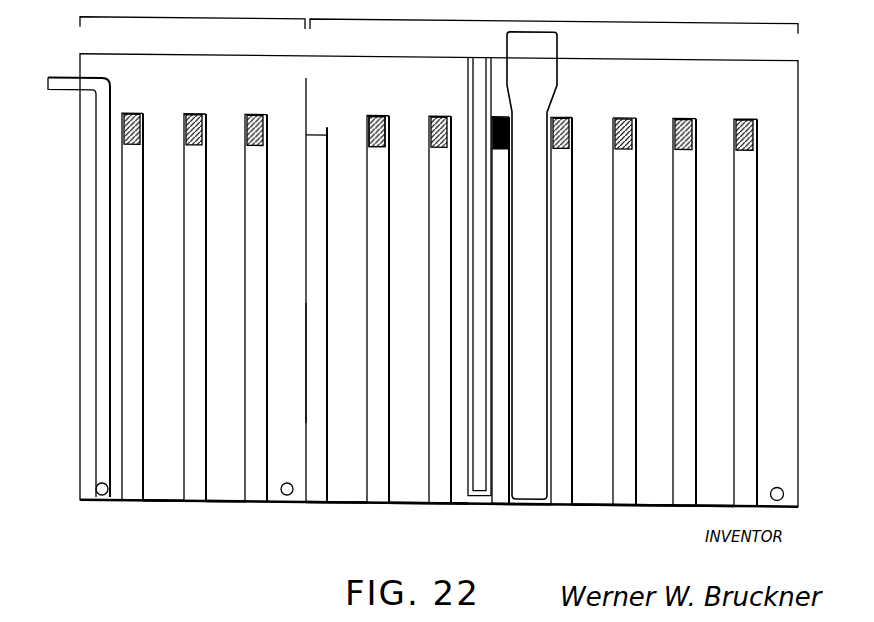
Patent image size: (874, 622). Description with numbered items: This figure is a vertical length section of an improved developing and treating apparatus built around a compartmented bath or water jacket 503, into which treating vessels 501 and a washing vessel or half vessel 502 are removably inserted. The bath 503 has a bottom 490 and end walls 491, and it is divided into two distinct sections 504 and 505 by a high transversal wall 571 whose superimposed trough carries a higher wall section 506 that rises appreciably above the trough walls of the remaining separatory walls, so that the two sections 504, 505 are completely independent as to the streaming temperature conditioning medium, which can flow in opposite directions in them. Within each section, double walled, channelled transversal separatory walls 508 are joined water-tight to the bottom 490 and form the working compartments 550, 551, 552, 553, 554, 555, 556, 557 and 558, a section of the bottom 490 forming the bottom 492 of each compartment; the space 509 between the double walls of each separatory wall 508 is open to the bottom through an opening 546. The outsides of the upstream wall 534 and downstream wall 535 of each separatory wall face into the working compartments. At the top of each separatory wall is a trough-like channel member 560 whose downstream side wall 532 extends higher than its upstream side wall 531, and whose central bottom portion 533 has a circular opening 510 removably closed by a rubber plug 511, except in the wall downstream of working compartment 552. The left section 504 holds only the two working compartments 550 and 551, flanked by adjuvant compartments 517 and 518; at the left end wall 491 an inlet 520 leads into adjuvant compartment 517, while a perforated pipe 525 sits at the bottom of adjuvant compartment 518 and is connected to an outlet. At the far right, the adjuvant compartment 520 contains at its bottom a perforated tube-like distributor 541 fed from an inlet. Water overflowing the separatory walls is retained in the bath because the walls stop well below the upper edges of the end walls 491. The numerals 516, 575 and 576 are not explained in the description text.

The bottom 490 is at (590, 506).
The end walls 491 is at (80, 313).
The bottom of compartment 492 is at (157, 503).
The treating vessels 501 is at (557, 264).
The washing vessel or half vessel 502 is at (465, 263).
The compartmented bath or water jacket 503 is at (106, 514).
The left section 504 is at (192, 14).
The right section 505 is at (554, 17).
The higher wall section 506 is at (303, 95).
The transversal separatory walls 508 is at (697, 372).
The space between double walls 509 is at (560, 488).
The circular opening 510 is at (318, 133).
The rubber plug 511 is at (388, 120).
The bottom wall section 516 is at (230, 488).
The adjuvant compartment 517 is at (86, 162).
The adjuvant compartment 518 is at (250, 557).
The inlet 520 is at (62, 78).
The perforated pipe 525 is at (287, 496).
The upstream side wall 531 is at (616, 120).
The downstream side wall 532 is at (634, 130).
The central bottom portion 533 is at (612, 148).
The upstream wall 534 is at (243, 268).
The downstream wall 535 is at (268, 268).
The perforated tube-like distributor 541 is at (780, 501).
The opening 546 is at (438, 504).
The working compartment 550 is at (151, 306).
The working compartment 551 is at (214, 307).
The working compartment 552 is at (358, 309).
The working compartment 553 is at (421, 309).
The working compartment 554 is at (458, 151).
The working compartment 555 is at (578, 100).
The working compartment 556 is at (553, 310).
The working compartment 557 is at (668, 311).
The working compartment 558 is at (728, 312).
The trough-like channel members 560 is at (758, 145).
The high transversal wall 571 is at (305, 358).
The plate 575 is at (318, 220).
The bottom wall section 576 is at (322, 504).